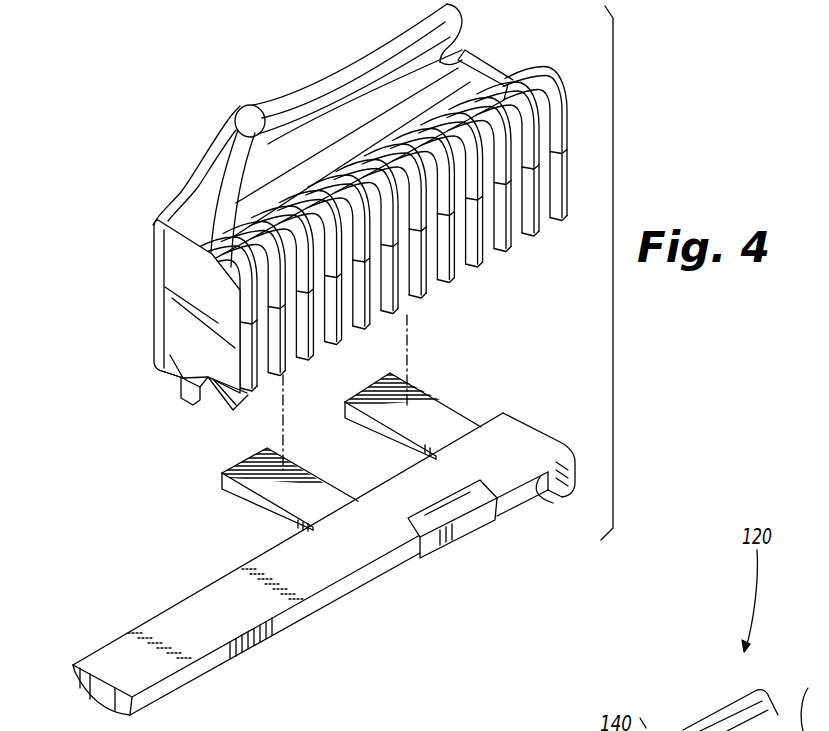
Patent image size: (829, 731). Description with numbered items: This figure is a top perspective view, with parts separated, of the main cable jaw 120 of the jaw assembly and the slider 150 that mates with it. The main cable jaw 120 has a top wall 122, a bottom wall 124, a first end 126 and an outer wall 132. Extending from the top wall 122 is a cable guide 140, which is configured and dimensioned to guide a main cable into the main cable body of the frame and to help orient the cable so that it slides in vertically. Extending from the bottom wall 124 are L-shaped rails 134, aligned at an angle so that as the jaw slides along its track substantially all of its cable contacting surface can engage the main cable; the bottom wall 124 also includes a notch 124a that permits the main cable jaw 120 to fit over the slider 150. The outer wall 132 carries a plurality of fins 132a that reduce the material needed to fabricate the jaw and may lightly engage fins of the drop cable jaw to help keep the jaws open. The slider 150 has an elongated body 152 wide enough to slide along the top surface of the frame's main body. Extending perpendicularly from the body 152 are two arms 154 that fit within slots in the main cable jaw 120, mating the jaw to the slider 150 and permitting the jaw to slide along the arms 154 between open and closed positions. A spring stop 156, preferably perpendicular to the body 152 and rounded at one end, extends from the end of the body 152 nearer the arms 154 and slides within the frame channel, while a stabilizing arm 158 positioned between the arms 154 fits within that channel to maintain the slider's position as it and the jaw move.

The main cable jaw 120 is at (332, 231).
The top wall 122 is at (214, 165).
The bottom wall 124 is at (172, 375).
The notch 124a is at (244, 397).
The first end 126 is at (541, 88).
The outer wall 132 is at (398, 227).
The fins 132a is at (529, 238).
The rails 134 is at (181, 409).
The cable guide 140 is at (298, 82).
The slider 150 is at (301, 529).
The elongated body 152 is at (172, 627).
The arms 154 is at (300, 483).
The spring stop 156 is at (541, 503).
The stabilizing arm 158 is at (450, 550).